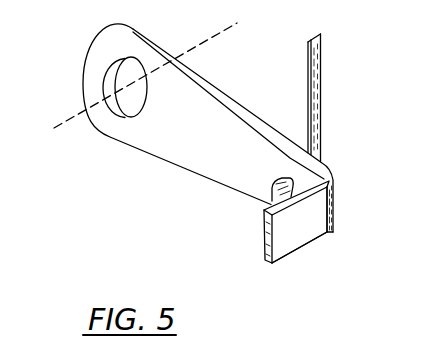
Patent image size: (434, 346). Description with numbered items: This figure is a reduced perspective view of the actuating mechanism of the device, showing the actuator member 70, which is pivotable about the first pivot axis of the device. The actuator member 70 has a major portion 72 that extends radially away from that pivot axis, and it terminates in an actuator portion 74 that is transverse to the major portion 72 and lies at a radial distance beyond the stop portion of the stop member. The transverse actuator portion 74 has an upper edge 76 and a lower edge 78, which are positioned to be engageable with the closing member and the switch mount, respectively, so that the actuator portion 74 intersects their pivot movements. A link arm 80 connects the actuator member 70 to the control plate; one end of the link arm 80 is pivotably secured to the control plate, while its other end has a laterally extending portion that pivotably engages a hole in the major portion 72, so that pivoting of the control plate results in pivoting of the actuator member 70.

The actuator member 70 is at (165, 147).
The major portion 72 is at (138, 192).
The actuator portion 74 is at (308, 228).
The upper edge 76 is at (334, 180).
The lower edge 78 is at (283, 257).
The link arm 80 is at (325, 97).